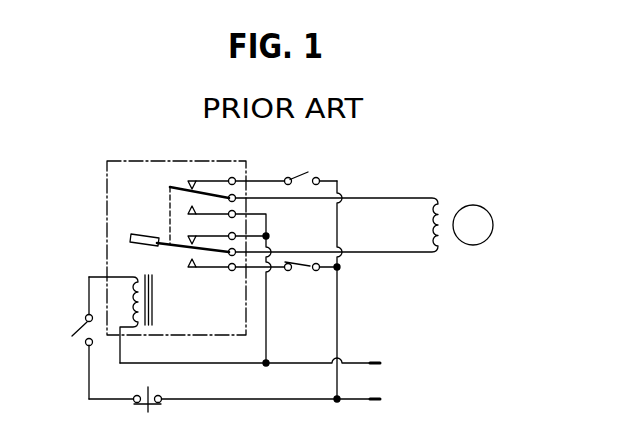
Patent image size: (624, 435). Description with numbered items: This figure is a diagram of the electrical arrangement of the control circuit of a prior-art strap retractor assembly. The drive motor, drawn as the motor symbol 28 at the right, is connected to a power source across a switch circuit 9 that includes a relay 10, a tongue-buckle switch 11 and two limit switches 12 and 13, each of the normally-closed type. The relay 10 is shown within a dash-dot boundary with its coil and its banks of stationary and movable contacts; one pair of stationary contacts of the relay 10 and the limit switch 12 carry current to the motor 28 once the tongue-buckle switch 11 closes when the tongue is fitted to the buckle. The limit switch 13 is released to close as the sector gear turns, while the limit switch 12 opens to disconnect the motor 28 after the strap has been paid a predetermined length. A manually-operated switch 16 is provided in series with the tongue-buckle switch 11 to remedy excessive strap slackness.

The switch circuit 9 is at (263, 169).
The relay 10 is at (106, 200).
The tongue-buckle switch 11 is at (74, 335).
The limit switch 12 is at (291, 272).
The limit switch 13 is at (304, 174).
The manually-operated switch 16 is at (148, 412).
The motor 28 is at (482, 198).